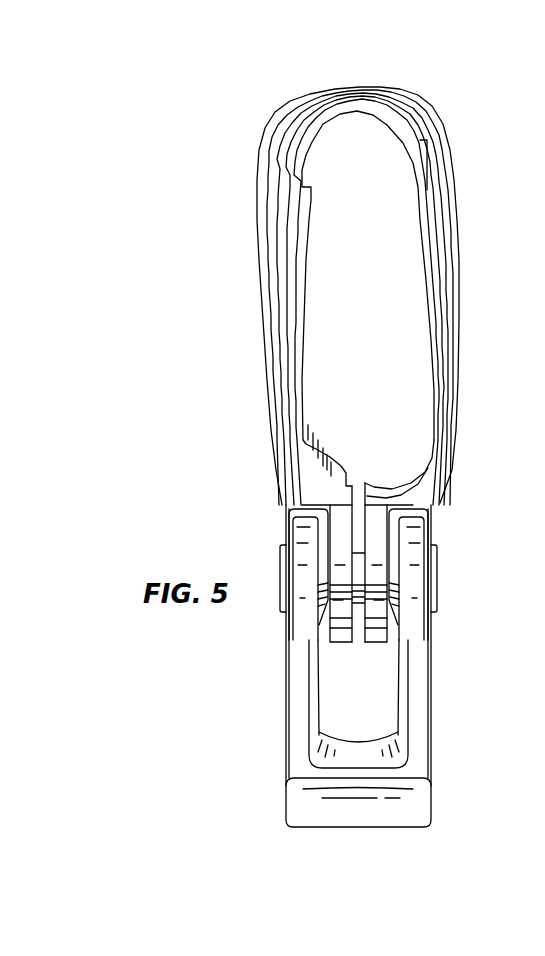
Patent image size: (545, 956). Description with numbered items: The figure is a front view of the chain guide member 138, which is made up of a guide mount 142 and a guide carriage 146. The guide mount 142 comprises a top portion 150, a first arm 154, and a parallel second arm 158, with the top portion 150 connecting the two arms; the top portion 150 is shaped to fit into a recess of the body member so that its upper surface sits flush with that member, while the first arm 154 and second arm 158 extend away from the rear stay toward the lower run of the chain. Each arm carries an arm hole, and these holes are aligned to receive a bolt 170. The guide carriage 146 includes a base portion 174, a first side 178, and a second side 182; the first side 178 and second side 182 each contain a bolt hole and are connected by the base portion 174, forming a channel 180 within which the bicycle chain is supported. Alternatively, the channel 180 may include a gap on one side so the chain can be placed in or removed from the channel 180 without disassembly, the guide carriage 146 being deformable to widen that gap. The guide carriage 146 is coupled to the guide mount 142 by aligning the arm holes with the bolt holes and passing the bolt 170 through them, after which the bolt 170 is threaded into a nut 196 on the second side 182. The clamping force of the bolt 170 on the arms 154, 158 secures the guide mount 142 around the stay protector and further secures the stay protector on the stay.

The guide member 138 is at (186, 159).
The guide mount 142 is at (240, 276).
The guide carriage 146 is at (255, 767).
The top portion 150 is at (363, 102).
The first arm 154 is at (278, 366).
The second arm 158 is at (453, 322).
The bolt 170 is at (280, 562).
The base portion 174 is at (338, 810).
The first side 178 is at (302, 703).
The channel 180 is at (355, 742).
The second side 182 is at (413, 672).
The nut 196 is at (357, 574).